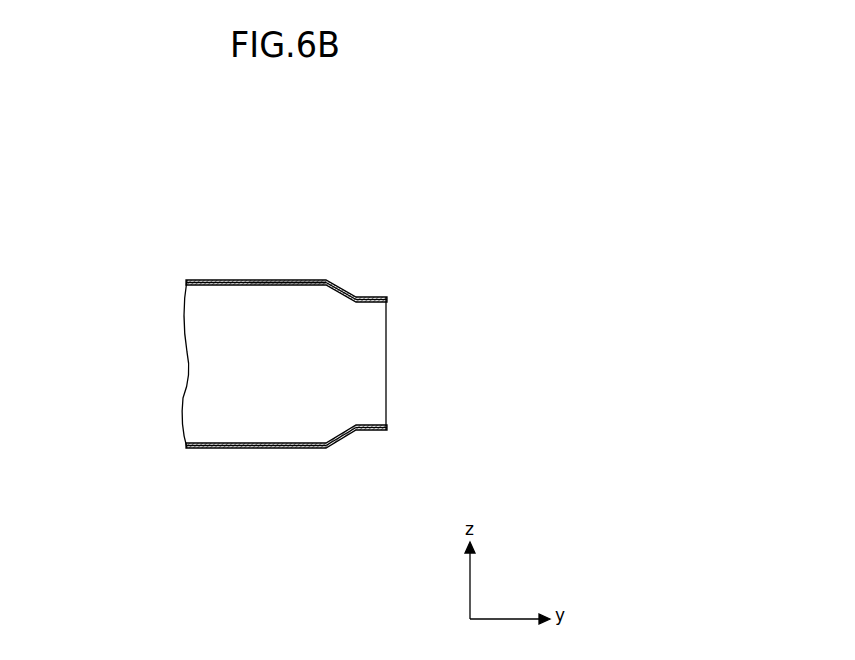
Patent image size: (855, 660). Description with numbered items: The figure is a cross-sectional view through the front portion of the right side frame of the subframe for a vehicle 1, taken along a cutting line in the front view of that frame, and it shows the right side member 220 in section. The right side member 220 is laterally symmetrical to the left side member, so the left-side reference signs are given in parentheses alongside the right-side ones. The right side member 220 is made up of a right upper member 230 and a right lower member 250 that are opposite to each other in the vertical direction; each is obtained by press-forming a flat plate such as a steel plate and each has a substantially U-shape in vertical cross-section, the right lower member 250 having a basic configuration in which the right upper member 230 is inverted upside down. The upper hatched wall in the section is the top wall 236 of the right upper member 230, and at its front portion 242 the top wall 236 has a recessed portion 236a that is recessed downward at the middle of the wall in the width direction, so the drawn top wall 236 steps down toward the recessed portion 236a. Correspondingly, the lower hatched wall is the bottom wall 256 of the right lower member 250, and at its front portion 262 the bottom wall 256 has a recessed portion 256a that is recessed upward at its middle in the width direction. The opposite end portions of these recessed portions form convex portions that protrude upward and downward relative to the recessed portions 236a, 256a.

The stator 1 is at (324, 332).
The right side member 220 is at (343, 220).
The top wall 236 is at (208, 277).
The right upper member 230 is at (296, 274).
The front portion 242 is at (352, 278).
The recessed portion 236a is at (373, 296).
The right lower member 250 is at (297, 481).
The bottom wall 256 is at (200, 448).
The front portion 262 is at (337, 468).
The recessed portion 256a is at (365, 428).